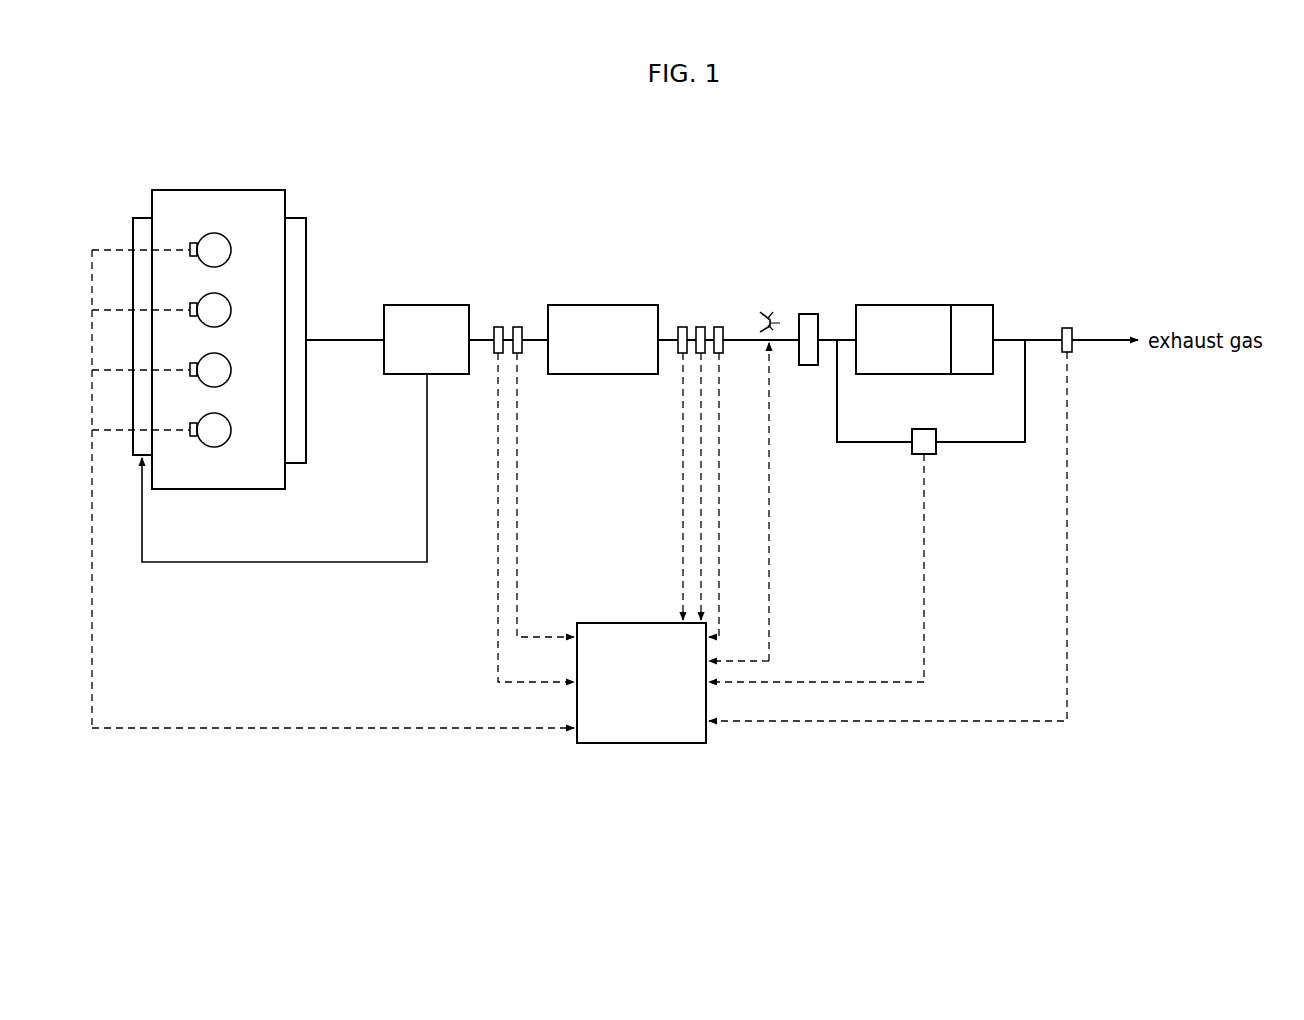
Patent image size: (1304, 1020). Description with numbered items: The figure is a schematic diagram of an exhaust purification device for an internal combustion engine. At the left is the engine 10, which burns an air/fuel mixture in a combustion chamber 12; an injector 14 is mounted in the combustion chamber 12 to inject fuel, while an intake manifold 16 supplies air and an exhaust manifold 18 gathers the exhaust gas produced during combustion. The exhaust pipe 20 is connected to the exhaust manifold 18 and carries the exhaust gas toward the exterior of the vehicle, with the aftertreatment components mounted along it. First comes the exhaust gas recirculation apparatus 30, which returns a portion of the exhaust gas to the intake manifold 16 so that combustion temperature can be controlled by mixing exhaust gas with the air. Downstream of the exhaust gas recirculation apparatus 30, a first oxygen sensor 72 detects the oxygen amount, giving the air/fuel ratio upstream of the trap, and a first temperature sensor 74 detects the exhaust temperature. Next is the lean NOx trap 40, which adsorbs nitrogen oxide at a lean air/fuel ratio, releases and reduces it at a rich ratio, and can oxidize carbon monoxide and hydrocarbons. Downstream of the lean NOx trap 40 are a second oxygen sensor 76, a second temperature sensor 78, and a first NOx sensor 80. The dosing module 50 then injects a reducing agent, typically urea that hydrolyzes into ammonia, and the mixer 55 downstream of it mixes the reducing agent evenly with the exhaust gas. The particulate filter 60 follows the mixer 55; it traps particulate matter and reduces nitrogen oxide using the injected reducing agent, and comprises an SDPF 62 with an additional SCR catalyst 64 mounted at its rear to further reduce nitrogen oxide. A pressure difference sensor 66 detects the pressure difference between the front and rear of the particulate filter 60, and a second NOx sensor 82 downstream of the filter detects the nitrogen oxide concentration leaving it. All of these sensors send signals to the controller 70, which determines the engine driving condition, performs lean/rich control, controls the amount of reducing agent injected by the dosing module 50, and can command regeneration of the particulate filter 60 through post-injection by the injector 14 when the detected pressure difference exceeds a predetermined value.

The engine 10 is at (247, 166).
The combustion chamber 12 is at (214, 233).
The injector 14 is at (190, 243).
The intake manifold 16 is at (138, 218).
The exhaust manifold 18 is at (297, 218).
The exhaust pipe 20 is at (347, 338).
The exhaust gas recirculation apparatus 30 is at (404, 305).
The lean NOx trap 40 is at (597, 305).
The dosing module 50 is at (764, 311).
The mixer 55 is at (808, 314).
The particulate filter 60 is at (924, 288).
The selective catalytic reduction catalyst on a diesel particulate filter (SDPF) 62 is at (874, 306).
The additional selective catalytic reduction catalyst 64 is at (975, 305).
The pressure difference sensor 66 is at (930, 455).
The controller 70 is at (630, 744).
The first oxygen sensor 72 is at (498, 327).
The first temperature sensor 74 is at (517, 327).
The second oxygen sensor 76 is at (681, 327).
The second temperature sensor 78 is at (700, 327).
The first NOx sensor 80 is at (719, 327).
The second NOx sensor 82 is at (1068, 328).